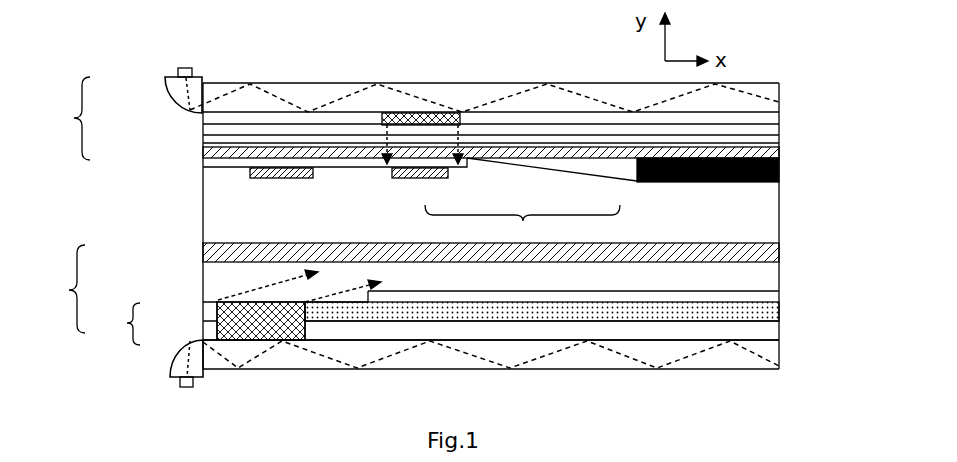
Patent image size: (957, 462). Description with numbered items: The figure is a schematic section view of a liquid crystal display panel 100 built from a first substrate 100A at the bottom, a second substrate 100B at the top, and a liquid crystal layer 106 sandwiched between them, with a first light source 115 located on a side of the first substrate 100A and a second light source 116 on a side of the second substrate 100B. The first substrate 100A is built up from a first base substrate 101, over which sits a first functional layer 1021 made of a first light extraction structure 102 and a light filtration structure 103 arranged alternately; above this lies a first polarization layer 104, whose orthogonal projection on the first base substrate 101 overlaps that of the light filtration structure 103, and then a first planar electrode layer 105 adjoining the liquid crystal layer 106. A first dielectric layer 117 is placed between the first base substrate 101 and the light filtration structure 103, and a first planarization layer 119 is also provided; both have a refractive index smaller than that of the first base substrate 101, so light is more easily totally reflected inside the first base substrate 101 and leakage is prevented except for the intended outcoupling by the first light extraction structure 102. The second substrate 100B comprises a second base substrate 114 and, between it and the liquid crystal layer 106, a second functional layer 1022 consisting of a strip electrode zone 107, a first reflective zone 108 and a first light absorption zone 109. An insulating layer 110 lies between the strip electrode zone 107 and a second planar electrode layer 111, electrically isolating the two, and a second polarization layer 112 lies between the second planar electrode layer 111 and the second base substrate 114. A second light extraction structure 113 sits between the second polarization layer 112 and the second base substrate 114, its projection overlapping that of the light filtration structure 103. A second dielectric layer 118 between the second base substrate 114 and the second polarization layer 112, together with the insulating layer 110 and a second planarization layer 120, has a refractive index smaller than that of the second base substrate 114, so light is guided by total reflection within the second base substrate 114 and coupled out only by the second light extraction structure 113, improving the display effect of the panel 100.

The liquid crystal display panel 100 is at (530, 46).
The first substrate 100A is at (48, 289).
The second substrate 100B is at (54, 118).
The first base substrate 101 is at (763, 358).
The first light extraction structure 102 is at (230, 333).
The light filtration structure 103 is at (213, 311).
The first polarization layer 104 is at (760, 296).
The first planar electrode layer 105 is at (225, 252).
The liquid crystal layer 106 is at (227, 207).
The strip electrode zone 107 is at (425, 178).
The first reflective zone 108 is at (538, 164).
The first light absorption zone 109 is at (658, 182).
The insulating layer 110 is at (362, 162).
The second planar electrode layer 111 is at (228, 154).
The second polarization layer 112 is at (230, 131).
The second light extraction structure 113 is at (417, 120).
The second base substrate 114 is at (763, 90).
The first light source 115 is at (193, 383).
The second light source 116 is at (182, 68).
The first dielectric layer 117 is at (760, 336).
The second dielectric layer 118 is at (756, 118).
The first planarization layer 119 is at (760, 273).
The second planarization layer 120 is at (756, 142).
The first functional layer 1021 is at (108, 324).
The second functional layer 1022 is at (522, 225).